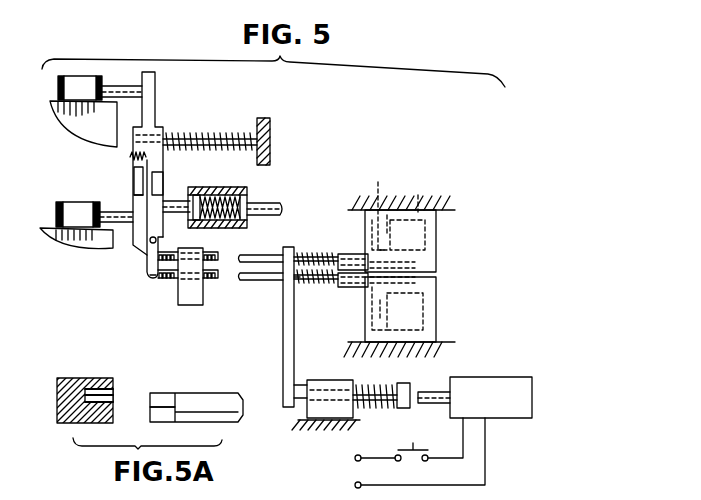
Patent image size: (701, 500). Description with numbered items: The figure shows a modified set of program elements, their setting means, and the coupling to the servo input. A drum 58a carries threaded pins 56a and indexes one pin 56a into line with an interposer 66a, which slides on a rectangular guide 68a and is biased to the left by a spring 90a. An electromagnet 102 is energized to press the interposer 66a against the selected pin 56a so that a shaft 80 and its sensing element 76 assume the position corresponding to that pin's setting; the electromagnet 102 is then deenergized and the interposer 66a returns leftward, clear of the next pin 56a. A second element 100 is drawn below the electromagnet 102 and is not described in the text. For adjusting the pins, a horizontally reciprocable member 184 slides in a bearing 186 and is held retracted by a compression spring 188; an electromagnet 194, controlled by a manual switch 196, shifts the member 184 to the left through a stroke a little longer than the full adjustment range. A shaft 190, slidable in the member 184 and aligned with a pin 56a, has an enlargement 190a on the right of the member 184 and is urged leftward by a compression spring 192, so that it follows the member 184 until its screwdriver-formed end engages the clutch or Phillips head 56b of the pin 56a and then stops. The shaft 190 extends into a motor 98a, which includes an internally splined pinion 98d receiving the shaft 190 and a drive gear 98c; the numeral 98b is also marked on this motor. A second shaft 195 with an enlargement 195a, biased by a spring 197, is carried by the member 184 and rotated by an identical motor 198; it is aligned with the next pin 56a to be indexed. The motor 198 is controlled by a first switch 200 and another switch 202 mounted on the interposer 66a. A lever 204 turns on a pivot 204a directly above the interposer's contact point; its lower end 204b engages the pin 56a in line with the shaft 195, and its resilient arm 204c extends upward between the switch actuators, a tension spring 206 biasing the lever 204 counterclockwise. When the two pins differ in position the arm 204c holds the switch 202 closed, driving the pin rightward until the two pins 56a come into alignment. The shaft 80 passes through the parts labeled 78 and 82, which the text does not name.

In FIG. 5, the electromagnet 102 is at (58, 84).
In FIG. 5, the lower roller assembly 100 is at (67, 202).
In FIG. 5, the interposer 66a is at (153, 82).
In FIG. 5, the spring 90a is at (192, 134).
In FIG. 5, the rectangular guide 68a is at (222, 133).
In FIG. 5, the tension spring 206 is at (132, 152).
In FIG. 5, the first switch 200 is at (133, 172).
In FIG. 5, the switch 202 is at (158, 177).
In FIG. 5, the lever 204 is at (143, 253).
In FIG. 5, the pivot 204a is at (157, 242).
In FIG. 5, the lower end of lever 204b is at (156, 277).
In FIG. 5, the arm 204c is at (133, 207).
In FIG. 5, the sensing element 76 is at (176, 205).
In FIG. 5, the spring housing 78 is at (208, 196).
In FIG. 5, the piston 82 is at (233, 205).
In FIG. 5, the shaft 80 is at (263, 205).
In FIG. 5, the drum 58a is at (178, 290).
In FIG. 5, the pin 56a is at (212, 265).
In FIG. 5A, the pin 56a is at (82, 378).
In FIG. 5A, the clutch head or Phillips head 56b is at (115, 390).
In FIG. 5, the adjustment shaft 190 is at (252, 257).
In FIG. 5A, the adjustment shaft 190 is at (182, 400).
In FIG. 5, the enlargement 190a is at (303, 253).
In FIG. 5A, the enlargement 190a is at (158, 415).
In FIG. 5, the shaft 195 is at (263, 282).
In FIG. 5A, the shaft 195 is at (202, 392).
In FIG. 5, the shaft enlargement 195a is at (305, 288).
In FIG. 5, the compression spring 192 is at (323, 251).
In FIG. 5, the spring 197 is at (323, 287).
In FIG. 5, the horizontally reciprocable member 184 is at (283, 343).
In FIG. 5, the motor 98a is at (432, 238).
In FIG. 5, the plunger 98b is at (370, 266).
In FIG. 5, the drive gear 98c is at (378, 207).
In FIG. 5, the internally splined pinion 98d is at (418, 195).
In FIG. 5, the motor 198 is at (432, 303).
In FIG. 5, the bearing 186 is at (325, 381).
In FIG. 5, the compression spring 188 is at (380, 385).
In FIG. 5, the electromagnet 194 is at (492, 380).
In FIG. 5, the manual switch 196 is at (388, 452).